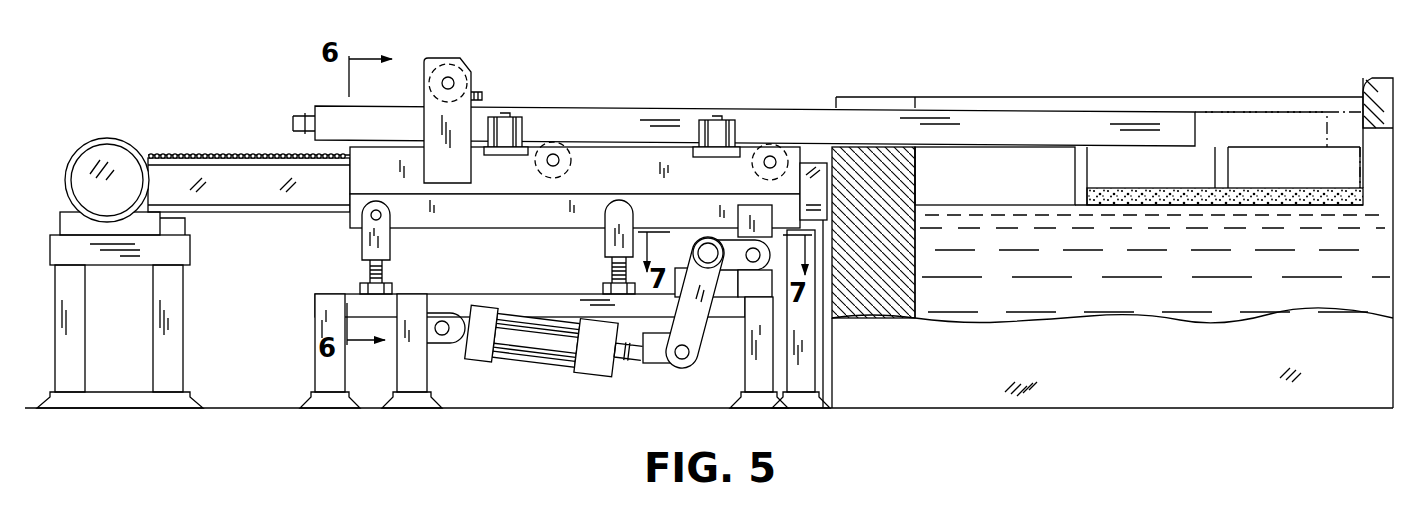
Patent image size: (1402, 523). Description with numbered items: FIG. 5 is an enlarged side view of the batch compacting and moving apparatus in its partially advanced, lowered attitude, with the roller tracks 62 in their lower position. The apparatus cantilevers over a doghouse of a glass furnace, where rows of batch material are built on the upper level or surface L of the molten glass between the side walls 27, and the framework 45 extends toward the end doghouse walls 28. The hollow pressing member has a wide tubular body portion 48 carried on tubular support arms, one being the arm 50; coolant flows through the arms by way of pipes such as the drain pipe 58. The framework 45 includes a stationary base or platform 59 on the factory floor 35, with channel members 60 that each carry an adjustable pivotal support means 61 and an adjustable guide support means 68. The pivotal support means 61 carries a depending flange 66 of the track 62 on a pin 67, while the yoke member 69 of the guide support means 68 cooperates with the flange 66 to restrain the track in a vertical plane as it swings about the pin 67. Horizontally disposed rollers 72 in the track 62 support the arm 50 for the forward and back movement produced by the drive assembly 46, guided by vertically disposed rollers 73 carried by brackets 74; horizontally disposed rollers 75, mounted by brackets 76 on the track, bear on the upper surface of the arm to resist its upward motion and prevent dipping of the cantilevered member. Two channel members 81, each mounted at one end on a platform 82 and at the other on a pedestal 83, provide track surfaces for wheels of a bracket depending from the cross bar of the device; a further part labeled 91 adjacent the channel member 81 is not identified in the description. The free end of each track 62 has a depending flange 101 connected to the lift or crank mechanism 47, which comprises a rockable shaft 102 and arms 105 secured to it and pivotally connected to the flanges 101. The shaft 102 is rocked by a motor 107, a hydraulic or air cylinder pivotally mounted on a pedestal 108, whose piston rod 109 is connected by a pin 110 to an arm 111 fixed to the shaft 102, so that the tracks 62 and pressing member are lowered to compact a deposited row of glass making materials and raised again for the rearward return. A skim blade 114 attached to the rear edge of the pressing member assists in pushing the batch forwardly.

The side walls 27 is at (1117, 384).
The end doghouse walls 28 is at (914, 290).
The factory floor 35 is at (238, 406).
The framework 45 is at (487, 228).
The drive assembly 46 is at (88, 138).
The crank mechanism 47 is at (650, 396).
The tubular body portion 48 is at (1212, 142).
The tubular support arm 50 is at (803, 108).
The drain pipe 58 is at (300, 120).
The stationary base or platform 59 is at (733, 324).
The channel members 60 is at (511, 294).
The adjustable pivotal support means 61 is at (360, 268).
The roller tracks 62 is at (360, 172).
The depending flange 66 is at (425, 220).
The pin 67 is at (356, 216).
The adjustable guide support means 68 is at (604, 272).
The yoke member 69 is at (605, 238).
The rollers 72 is at (572, 168).
The vertically disposed rollers 73 is at (525, 122).
The brackets 74 is at (738, 152).
The horizontally disposed rollers 75 is at (470, 62).
The brackets 76 is at (438, 58).
The channel members 81 is at (192, 175).
The platform 82 is at (186, 321).
The pedestal 83 is at (808, 360).
The chain 91 is at (302, 154).
The depending flange 101 is at (755, 210).
The rockable shaft 102 is at (708, 246).
The arms 105 is at (776, 255).
The motor 107 is at (550, 350).
The pedestal 108 is at (430, 385).
The piston rod 109 is at (632, 356).
The pin 110 is at (686, 360).
The arm 111 is at (690, 302).
The skim blade 114 is at (1078, 170).
The upper level or surface of the molten glass L is at (966, 205).